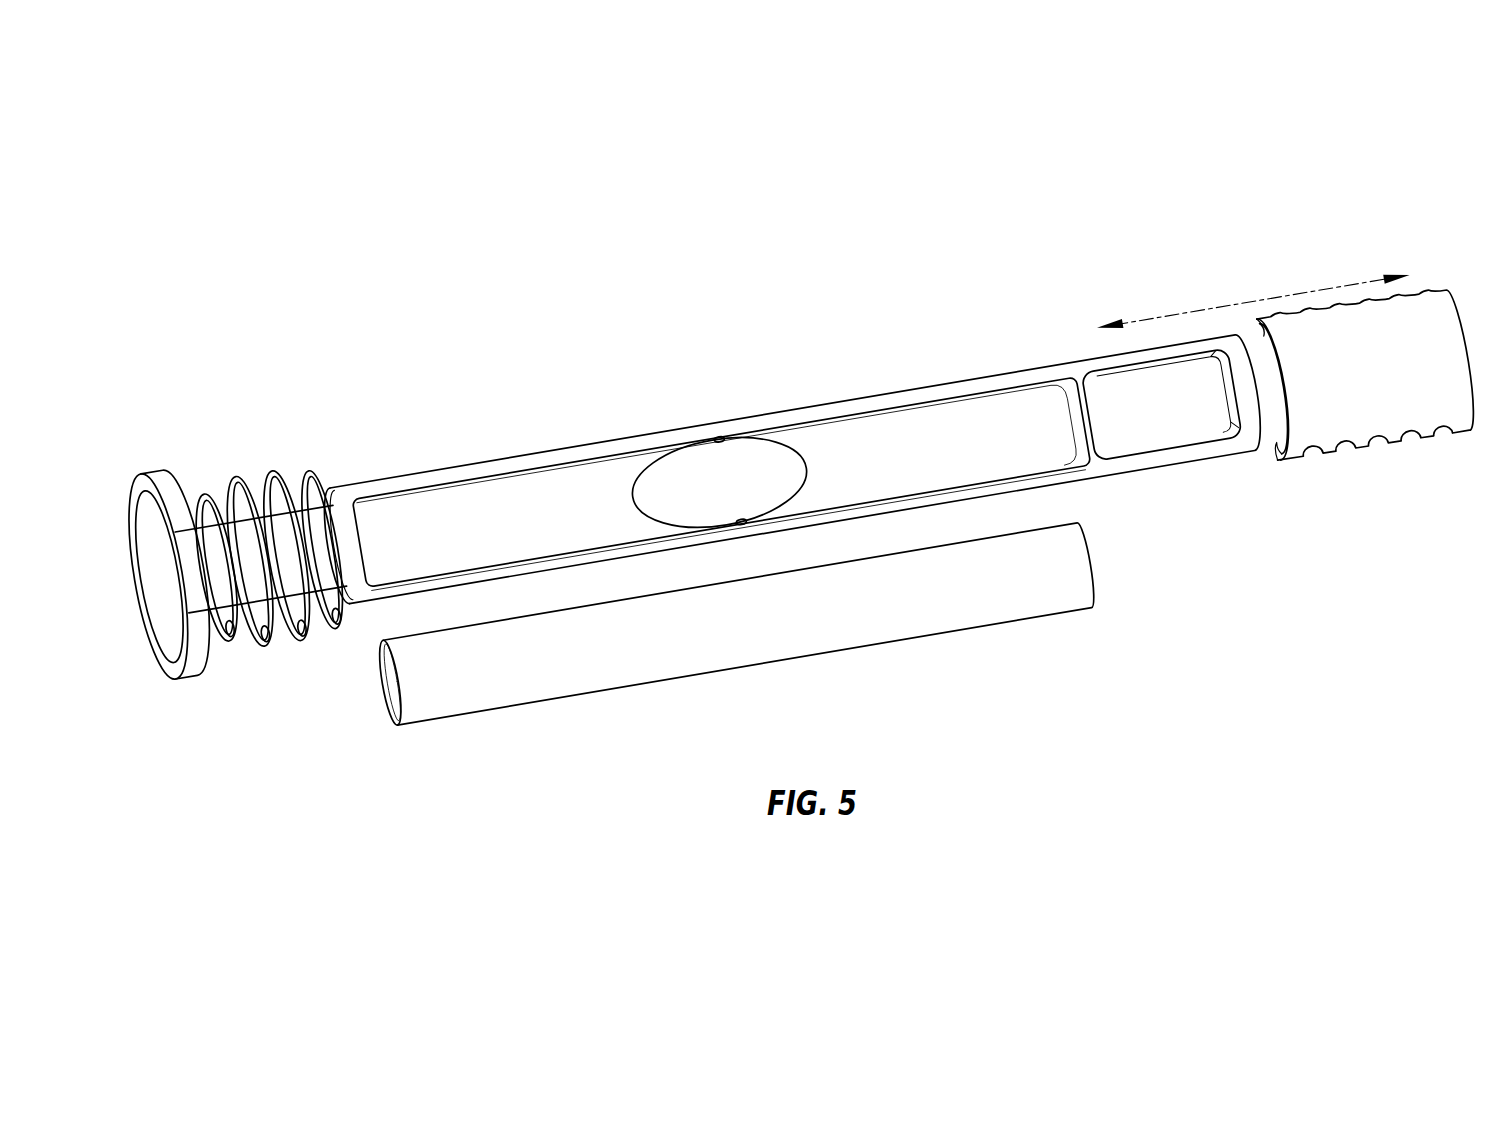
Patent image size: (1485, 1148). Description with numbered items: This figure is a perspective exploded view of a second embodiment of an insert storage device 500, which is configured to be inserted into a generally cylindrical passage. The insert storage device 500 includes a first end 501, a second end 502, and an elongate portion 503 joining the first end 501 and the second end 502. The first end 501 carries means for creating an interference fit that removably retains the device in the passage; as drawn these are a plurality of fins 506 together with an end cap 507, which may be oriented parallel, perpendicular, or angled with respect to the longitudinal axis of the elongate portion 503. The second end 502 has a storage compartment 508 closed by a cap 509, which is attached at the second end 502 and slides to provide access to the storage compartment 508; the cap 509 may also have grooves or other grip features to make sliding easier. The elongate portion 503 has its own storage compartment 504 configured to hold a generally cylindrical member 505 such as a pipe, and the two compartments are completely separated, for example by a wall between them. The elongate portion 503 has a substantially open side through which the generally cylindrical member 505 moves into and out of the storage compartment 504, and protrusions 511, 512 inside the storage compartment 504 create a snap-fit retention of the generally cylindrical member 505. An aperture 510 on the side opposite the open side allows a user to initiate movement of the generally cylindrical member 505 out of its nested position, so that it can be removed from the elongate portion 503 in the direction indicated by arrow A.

The insert storage device 500 is at (168, 228).
The first end 501 is at (328, 403).
The second end 502 is at (1438, 215).
The elongate portion 503 is at (1062, 280).
The storage compartment 504 is at (875, 462).
The generally cylindrical member 505 is at (383, 688).
The fins 506 is at (323, 622).
The end cap 507 is at (173, 676).
The storage compartment 508 is at (1173, 427).
The cap 509 is at (1342, 398).
The aperture 510 is at (650, 500).
The protrusion 511 is at (721, 443).
The protrusion 512 is at (733, 517).